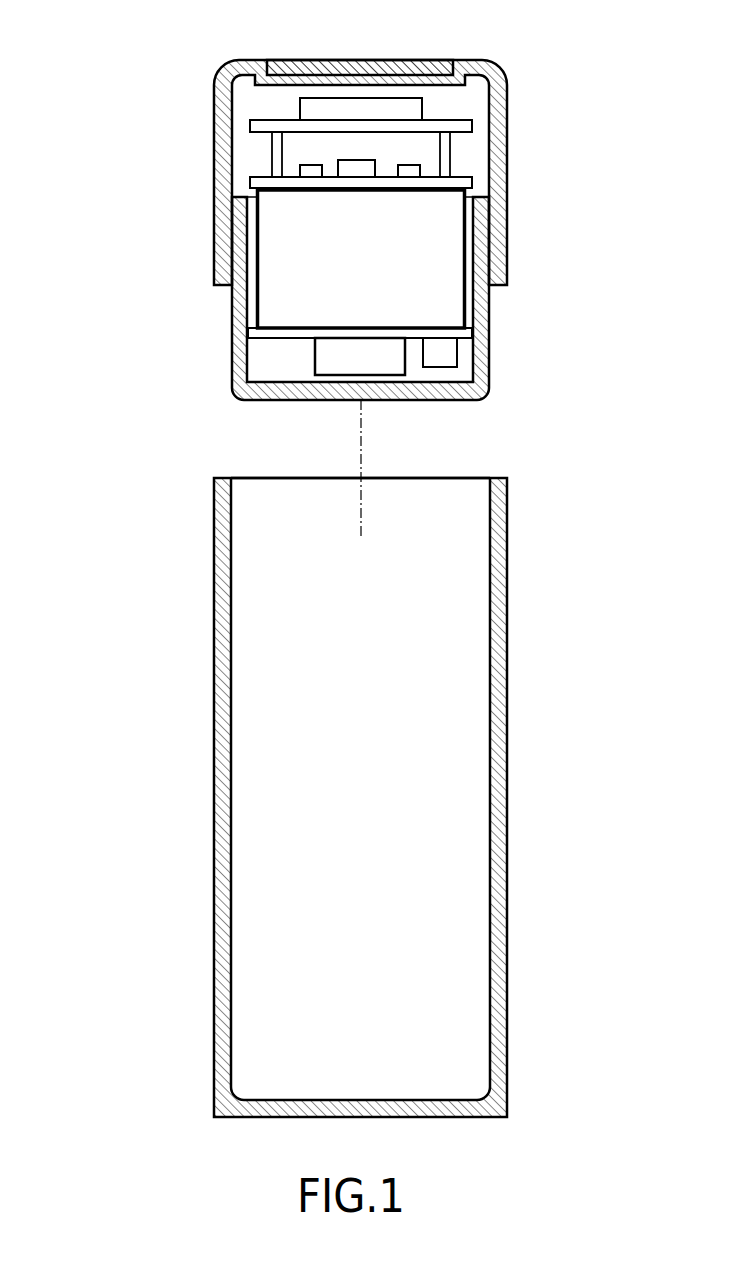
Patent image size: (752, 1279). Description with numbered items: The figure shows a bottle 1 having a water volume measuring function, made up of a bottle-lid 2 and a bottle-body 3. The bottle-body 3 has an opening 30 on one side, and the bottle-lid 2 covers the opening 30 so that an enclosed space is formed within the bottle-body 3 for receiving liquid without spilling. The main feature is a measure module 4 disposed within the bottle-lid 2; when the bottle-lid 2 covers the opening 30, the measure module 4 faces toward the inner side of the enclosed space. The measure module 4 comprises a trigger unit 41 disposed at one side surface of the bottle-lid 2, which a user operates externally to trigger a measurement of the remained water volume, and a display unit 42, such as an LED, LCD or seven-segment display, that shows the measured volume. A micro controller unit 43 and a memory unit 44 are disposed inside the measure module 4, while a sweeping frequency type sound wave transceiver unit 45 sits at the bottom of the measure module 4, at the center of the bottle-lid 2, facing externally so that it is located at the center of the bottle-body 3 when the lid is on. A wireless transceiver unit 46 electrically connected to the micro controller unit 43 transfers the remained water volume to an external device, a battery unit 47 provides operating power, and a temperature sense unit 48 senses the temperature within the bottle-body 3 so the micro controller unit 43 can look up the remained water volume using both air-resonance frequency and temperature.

The bottle 1 is at (64, 100).
The bottle-lid 2 is at (494, 72).
The bottle-body 3 is at (511, 841).
The measure module 4 is at (250, 105).
The opening 30 is at (460, 484).
The trigger unit 41 is at (372, 68).
The display unit 42 is at (412, 108).
The micro controller unit 43 is at (357, 166).
The memory unit 44 is at (310, 170).
The sweeping frequency type sound wave transceiver unit 45 is at (372, 347).
The wireless transceiver unit 46 is at (410, 167).
The battery unit 47 is at (425, 248).
The temperature sense unit 48 is at (443, 354).